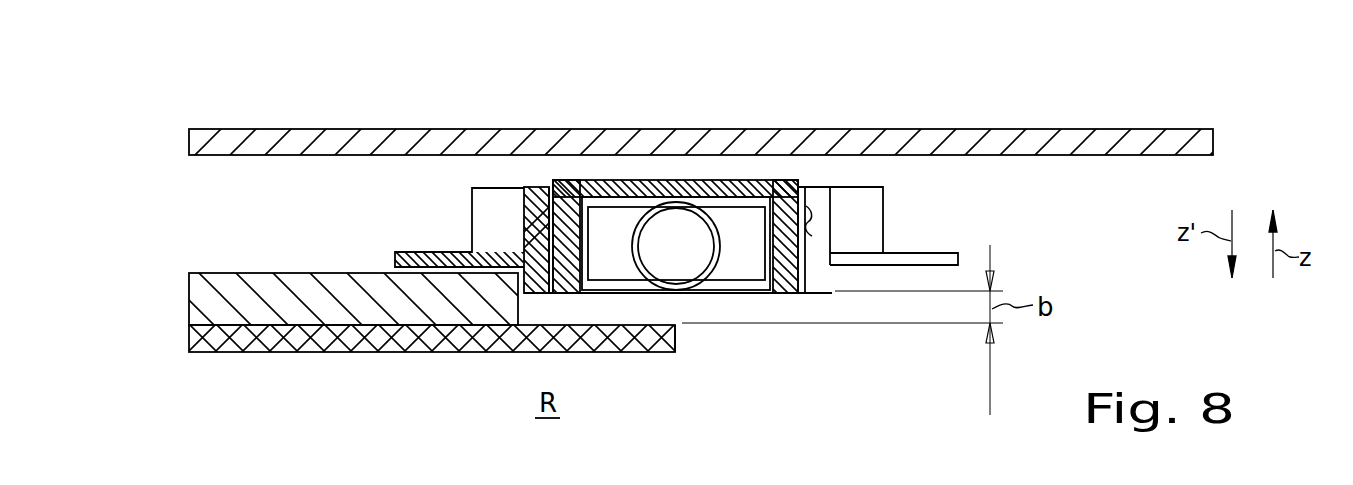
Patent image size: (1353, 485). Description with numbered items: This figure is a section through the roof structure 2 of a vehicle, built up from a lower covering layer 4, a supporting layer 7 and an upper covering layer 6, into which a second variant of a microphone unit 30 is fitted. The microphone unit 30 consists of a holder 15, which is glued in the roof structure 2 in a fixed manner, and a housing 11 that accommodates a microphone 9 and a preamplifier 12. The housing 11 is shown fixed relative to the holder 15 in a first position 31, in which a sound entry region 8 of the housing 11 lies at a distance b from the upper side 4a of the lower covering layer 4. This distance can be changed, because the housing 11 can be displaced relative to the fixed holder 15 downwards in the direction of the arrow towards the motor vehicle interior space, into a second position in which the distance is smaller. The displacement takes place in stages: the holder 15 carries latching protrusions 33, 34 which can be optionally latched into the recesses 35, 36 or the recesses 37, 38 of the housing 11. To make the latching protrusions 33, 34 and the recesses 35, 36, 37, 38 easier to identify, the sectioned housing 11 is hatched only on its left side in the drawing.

The roof structure 2 is at (1126, 98).
The lower covering layer 4 is at (202, 338).
The upper side of the lower covering layer 4a is at (640, 320).
The upper covering layer 6 is at (196, 141).
The supporting layer 7 is at (202, 302).
The sound entry region 8 is at (748, 262).
The microphone 9 is at (687, 262).
The housing 11 is at (786, 270).
The preamplifier 12 is at (762, 270).
The holder 15 is at (486, 215).
The microphone unit 30 is at (904, 195).
The first position 31 is at (904, 228).
The latching protrusion 33 is at (790, 218).
The latching protrusion 34 is at (565, 218).
The recess 35 is at (803, 213).
The recess 36 is at (551, 218).
The recess 37 is at (816, 230).
The recess 38 is at (530, 214).